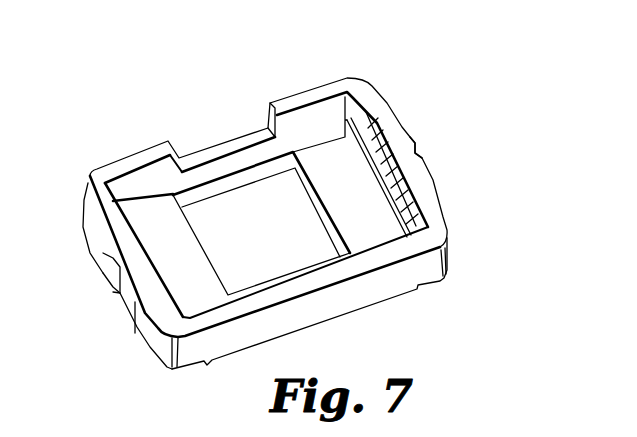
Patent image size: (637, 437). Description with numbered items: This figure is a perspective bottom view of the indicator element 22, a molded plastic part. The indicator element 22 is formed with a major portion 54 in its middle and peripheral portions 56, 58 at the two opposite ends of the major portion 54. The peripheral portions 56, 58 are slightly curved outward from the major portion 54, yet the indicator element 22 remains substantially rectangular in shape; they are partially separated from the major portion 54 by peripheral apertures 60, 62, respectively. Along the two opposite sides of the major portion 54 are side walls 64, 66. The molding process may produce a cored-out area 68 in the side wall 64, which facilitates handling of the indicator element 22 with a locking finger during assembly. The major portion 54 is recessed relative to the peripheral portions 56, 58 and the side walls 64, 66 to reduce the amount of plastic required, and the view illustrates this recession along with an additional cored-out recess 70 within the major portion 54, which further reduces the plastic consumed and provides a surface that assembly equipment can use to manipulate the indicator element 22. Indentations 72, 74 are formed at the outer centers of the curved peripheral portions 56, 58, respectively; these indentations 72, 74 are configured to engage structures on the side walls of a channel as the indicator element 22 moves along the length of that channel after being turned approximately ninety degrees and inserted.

The indicator element 22 is at (463, 50).
The major portion 54 is at (207, 286).
The peripheral portion 56 is at (388, 113).
The peripheral portion 58 is at (96, 195).
The peripheral aperture 60 is at (400, 211).
The peripheral aperture 62 is at (150, 287).
The side wall 64 is at (132, 160).
The side wall 66 is at (370, 293).
The cored-out area 68 is at (212, 152).
The cored-out recess 70 is at (281, 243).
The indentation 72 is at (418, 152).
The indentation 74 is at (108, 283).